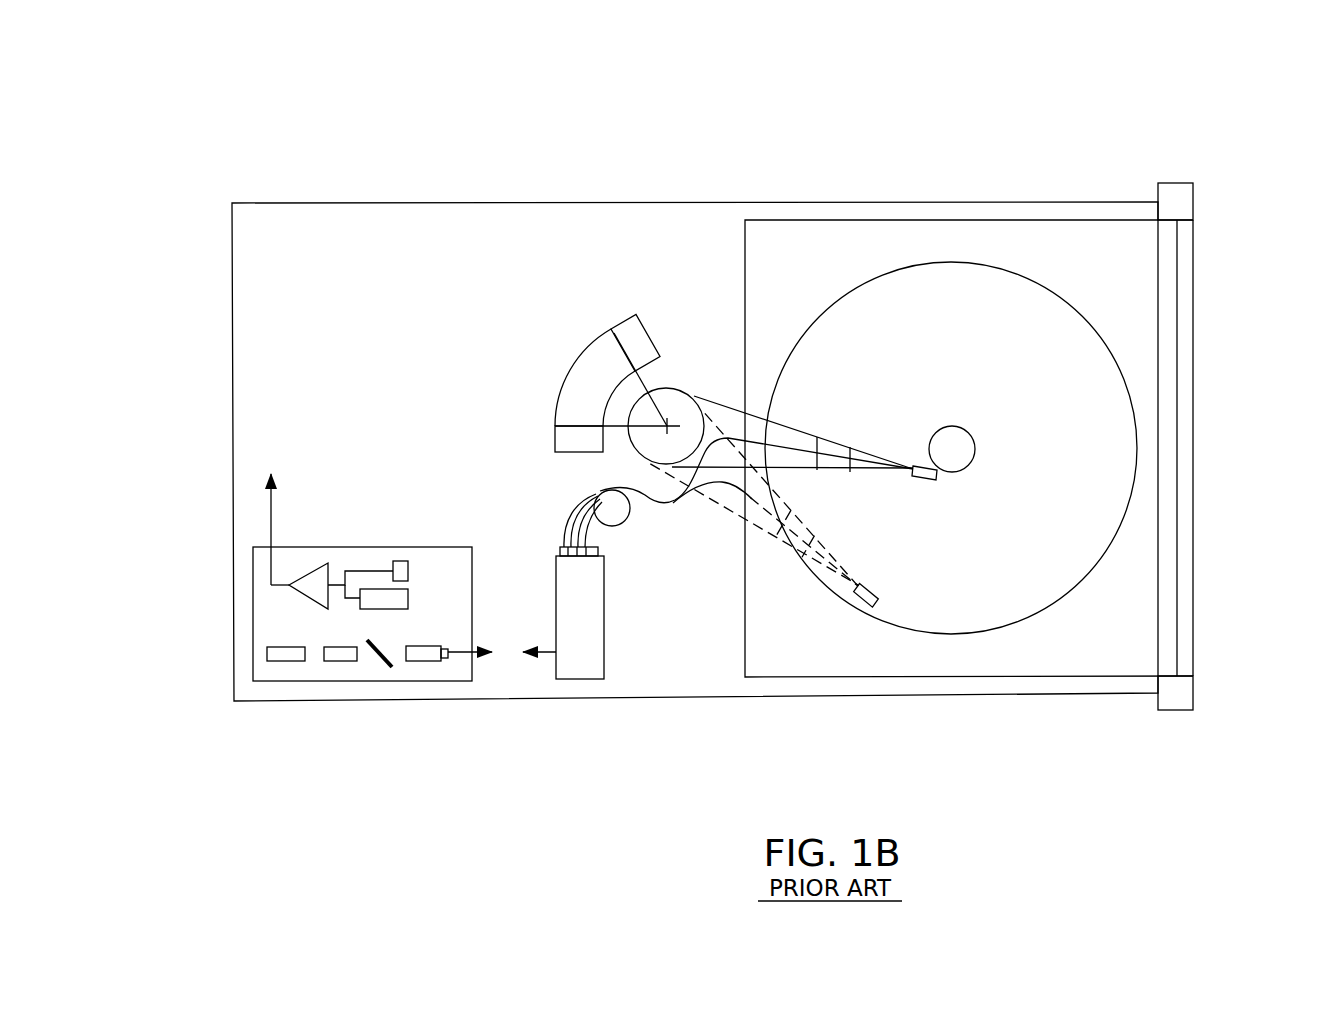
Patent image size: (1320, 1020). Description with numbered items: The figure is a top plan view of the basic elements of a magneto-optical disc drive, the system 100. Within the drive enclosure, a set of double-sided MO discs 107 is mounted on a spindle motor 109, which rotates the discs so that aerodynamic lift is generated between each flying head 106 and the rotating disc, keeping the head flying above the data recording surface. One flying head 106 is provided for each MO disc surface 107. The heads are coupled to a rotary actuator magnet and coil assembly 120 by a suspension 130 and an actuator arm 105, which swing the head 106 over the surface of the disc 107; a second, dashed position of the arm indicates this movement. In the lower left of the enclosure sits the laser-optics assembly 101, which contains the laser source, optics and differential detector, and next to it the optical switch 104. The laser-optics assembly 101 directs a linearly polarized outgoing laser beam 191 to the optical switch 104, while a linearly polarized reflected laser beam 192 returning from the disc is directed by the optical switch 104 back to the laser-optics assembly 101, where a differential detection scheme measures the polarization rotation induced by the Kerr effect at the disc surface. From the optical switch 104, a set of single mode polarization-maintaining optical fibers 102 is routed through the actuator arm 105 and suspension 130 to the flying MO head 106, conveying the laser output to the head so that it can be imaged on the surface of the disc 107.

The system 100 is at (1180, 57).
The laser-optics assembly 101 is at (342, 667).
The single mode PM optical fibers 102 is at (542, 490).
The optical switch 104 is at (614, 622).
The actuator arm 105 is at (799, 438).
The flying head 106 is at (937, 487).
The MO disc 107 is at (994, 262).
The spindle motor 109 is at (963, 436).
The rotary actuator magnet and coil assembly 120 is at (618, 322).
The suspension 130 is at (855, 450).
The outgoing laser beam 191 is at (485, 664).
The reflected laser beam 192 is at (540, 670).